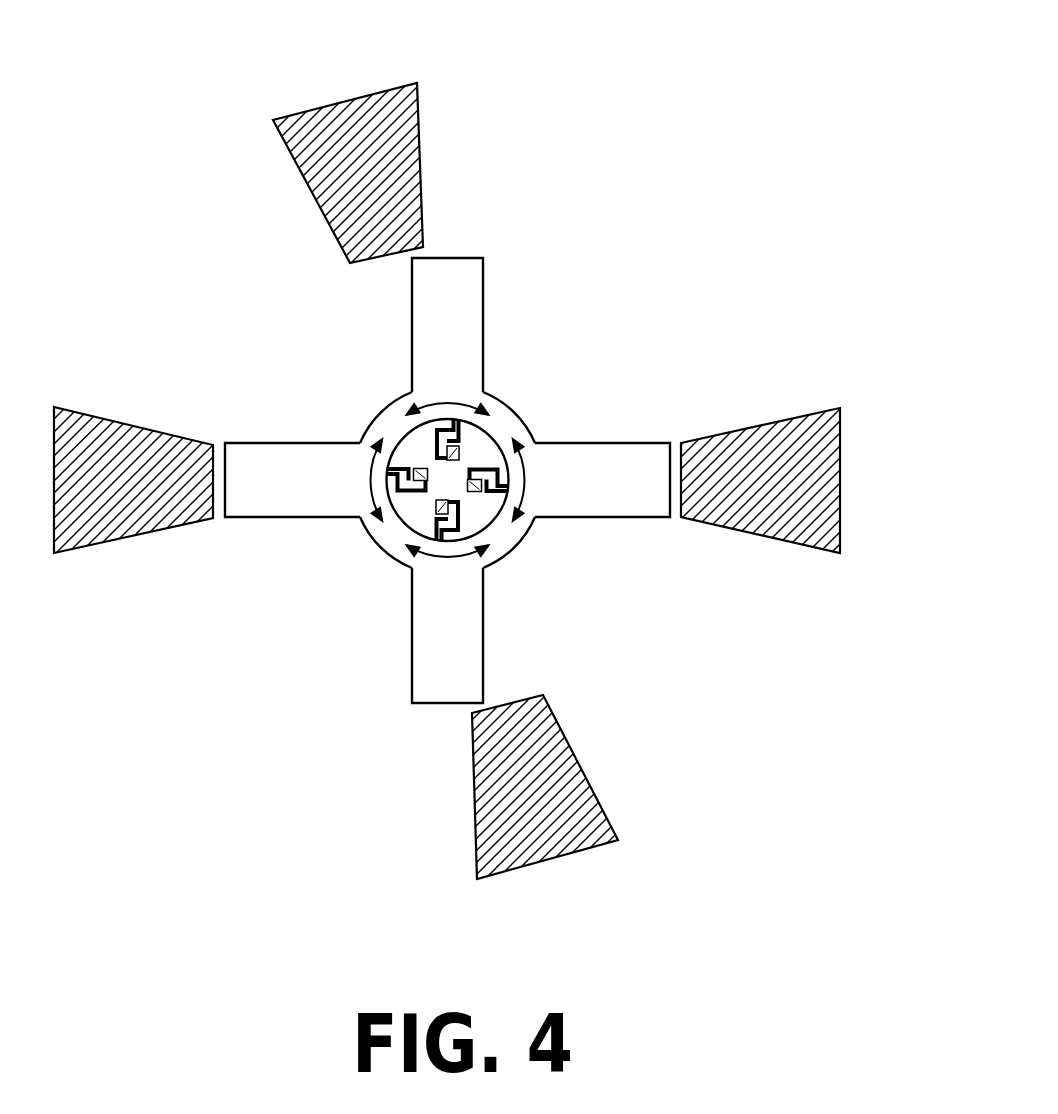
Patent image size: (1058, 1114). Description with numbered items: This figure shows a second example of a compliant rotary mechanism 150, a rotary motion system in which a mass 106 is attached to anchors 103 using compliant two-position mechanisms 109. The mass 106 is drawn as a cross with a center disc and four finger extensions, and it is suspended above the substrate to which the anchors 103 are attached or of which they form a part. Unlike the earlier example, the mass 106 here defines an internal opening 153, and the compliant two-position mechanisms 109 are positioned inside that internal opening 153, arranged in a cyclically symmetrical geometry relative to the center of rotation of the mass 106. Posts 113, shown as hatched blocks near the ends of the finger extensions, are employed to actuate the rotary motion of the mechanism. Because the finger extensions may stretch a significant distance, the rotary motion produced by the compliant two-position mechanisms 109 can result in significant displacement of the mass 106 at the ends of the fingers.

The compliant rotary mechanism 150 is at (824, 101).
The posts 113 is at (331, 113).
The mass 106 is at (622, 508).
The compliant two-position mechanisms 109 is at (447, 513).
The anchors 103 is at (447, 513).
The internal opening 153 is at (475, 448).